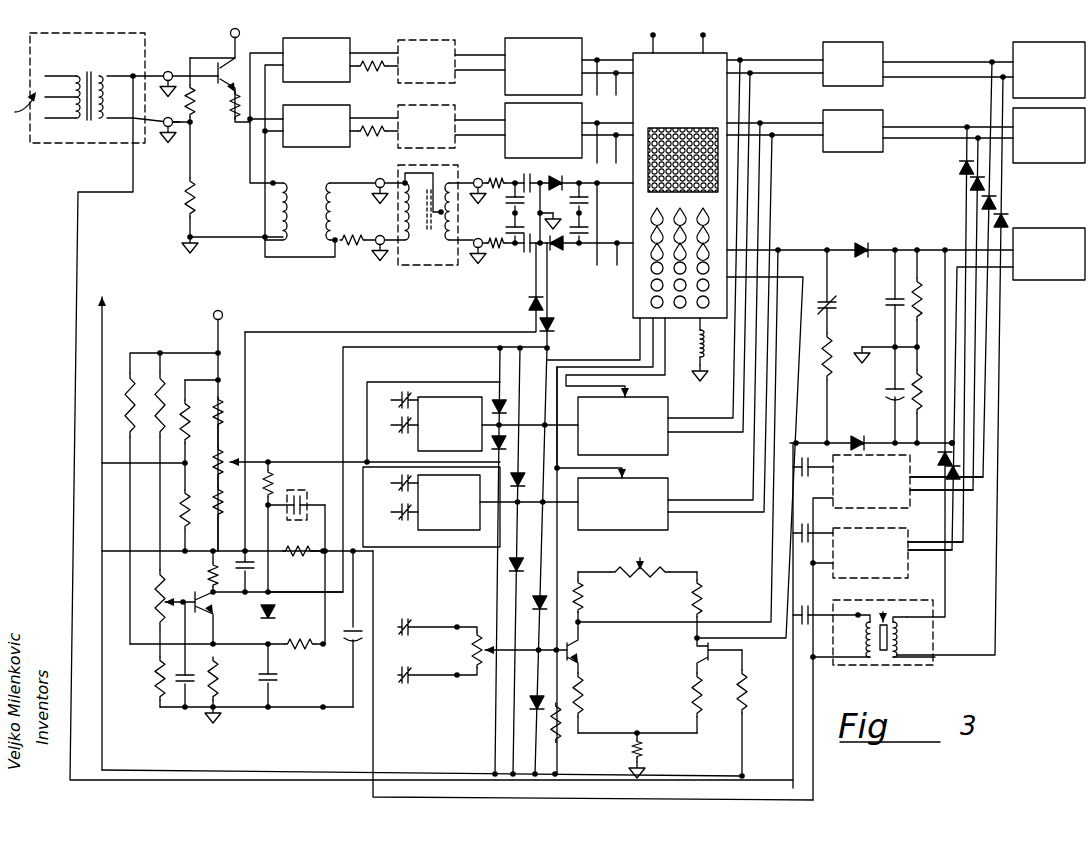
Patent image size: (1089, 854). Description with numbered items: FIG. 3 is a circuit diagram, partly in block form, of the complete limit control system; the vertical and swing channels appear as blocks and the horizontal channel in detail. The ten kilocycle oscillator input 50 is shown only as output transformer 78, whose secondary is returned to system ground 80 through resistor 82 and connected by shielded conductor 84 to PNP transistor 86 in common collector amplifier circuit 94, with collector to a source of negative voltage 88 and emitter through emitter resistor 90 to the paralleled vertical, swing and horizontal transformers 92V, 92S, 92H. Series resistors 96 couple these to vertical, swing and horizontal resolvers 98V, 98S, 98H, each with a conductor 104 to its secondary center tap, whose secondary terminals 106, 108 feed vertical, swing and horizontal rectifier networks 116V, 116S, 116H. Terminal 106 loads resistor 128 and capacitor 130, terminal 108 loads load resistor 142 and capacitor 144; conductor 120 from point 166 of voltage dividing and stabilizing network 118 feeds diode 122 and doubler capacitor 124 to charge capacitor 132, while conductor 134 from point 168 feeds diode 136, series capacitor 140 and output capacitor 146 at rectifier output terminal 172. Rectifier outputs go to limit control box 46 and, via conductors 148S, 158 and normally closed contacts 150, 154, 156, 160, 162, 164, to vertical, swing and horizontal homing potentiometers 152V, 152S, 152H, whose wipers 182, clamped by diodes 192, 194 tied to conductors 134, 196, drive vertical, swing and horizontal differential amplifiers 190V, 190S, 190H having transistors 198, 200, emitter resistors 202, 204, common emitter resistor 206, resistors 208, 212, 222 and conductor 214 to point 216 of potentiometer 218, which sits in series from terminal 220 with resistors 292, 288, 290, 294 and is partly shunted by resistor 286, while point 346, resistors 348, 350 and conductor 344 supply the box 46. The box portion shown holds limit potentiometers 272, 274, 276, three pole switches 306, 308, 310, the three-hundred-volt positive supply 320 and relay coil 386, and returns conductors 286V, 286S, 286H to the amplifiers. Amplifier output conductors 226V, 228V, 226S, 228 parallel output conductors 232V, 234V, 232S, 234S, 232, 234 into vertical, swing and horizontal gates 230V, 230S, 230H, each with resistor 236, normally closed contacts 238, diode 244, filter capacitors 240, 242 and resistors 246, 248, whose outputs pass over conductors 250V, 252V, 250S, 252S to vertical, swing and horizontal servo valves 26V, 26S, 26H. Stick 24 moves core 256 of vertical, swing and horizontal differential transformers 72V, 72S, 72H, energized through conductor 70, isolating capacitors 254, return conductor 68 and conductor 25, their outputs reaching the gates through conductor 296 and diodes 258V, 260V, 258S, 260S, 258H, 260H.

The oscillator input 50 is at (19, 106).
The output transformer 78 is at (89, 138).
The shielded conductor 84 is at (152, 74).
The PNP transistor 86 is at (197, 95).
The source of negative voltage 88 is at (231, 34).
The emitter resistor 90 is at (228, 123).
The common collector amplifier circuit 94 is at (214, 117).
The resistor 82 is at (200, 200).
The system ground 80 is at (195, 254).
The conductor 70 is at (78, 262).
The vertical transformer 92V is at (290, 40).
The swing transformer 92S is at (290, 106).
The horizontal transformer 92H is at (305, 190).
The series resistor 96 is at (360, 80).
The vertical resolver 98V is at (418, 42).
The swing resolver 98S is at (418, 106).
The horizontal resolver 98H is at (412, 169).
The conductor 104 is at (442, 212).
The secondary terminal 108 is at (454, 245).
The secondary terminal 106 is at (470, 178).
The load resistor 142 is at (478, 262).
The resistor 128 is at (493, 175).
The series capacitor 140 is at (498, 250).
The doubler capacitor 124 is at (520, 176).
The capacitor 130 is at (510, 202).
The capacitor 144 is at (509, 230).
The vertical rectifier network 116V is at (515, 40).
The swing rectifier network 116S is at (505, 105).
The horizontal rectifier network 116H is at (558, 209).
The conductor 148S is at (564, 252).
The capacitor 132 is at (590, 200).
The output capacitor 146 is at (590, 228).
The conductor 120 is at (597, 185).
The rectifier output terminal 172 is at (617, 248).
The conductor 158 is at (600, 270).
The diode 122 is at (528, 303).
The diode 136 is at (560, 324).
The limit control box 46 is at (660, 58).
The conductor 344 is at (652, 34).
The 300 volt positive supply 320 is at (706, 33).
The three pole switch 306 is at (674, 218).
The three pole switch 308 is at (670, 236).
The three pole switch 310 is at (670, 253).
The limit potentiometer 272 is at (670, 270).
The limit potentiometer 274 is at (670, 287).
The limit potentiometer 276 is at (670, 304).
The relay coil 386 is at (696, 341).
The conductor 286V is at (560, 352).
The conductor 286S is at (560, 366).
The conductor 286H is at (640, 386).
The output conductor 232V is at (752, 58).
The output conductor 234V is at (760, 78).
The amplifier output conductor 226V is at (752, 90).
The amplifier output conductor 228V is at (760, 118).
The output conductor 232S is at (780, 130).
The output conductor 234S is at (780, 138).
The output conductor 232 is at (798, 248).
The output conductor 234 is at (790, 275).
The vertical gate 230V is at (840, 42).
The swing gate 230S is at (840, 110).
The conductor 250V is at (900, 62).
The conductor 252V is at (900, 78).
The conductor 250S is at (898, 127).
The conductor 252S is at (908, 138).
The vertical servo valve 26V is at (1073, 42).
The swing servo valve 26S is at (1075, 165).
The horizontal servo valve 26H is at (1068, 282).
The diode 258S is at (963, 167).
The diode 260S is at (973, 184).
The diode 258V is at (981, 200).
The diode 260V is at (992, 218).
The diode 258H is at (950, 455).
The diode 260H is at (958, 468).
The diode 244 is at (862, 243).
The horizontal gate 230H is at (857, 271).
The normally closed contacts 238 is at (838, 300).
The resistor 236 is at (835, 340).
The filter capacitor 240 is at (886, 310).
The filter capacitor 242 is at (882, 396).
The resistor 246 is at (920, 252).
The resistor 248 is at (918, 372).
The amplifier output conductor 228 is at (790, 462).
The isolating capacitor 254 is at (800, 480).
The vertical differential transformer 72V is at (895, 510).
The swing differential transformer 72S is at (890, 580).
The horizontal differential transformer 72H is at (915, 667).
The conductor 296 is at (874, 600).
The core 256 is at (884, 650).
The vertical differential amplifier 190V is at (670, 445).
The swing differential amplifier 190S is at (648, 480).
The horizontal differential amplifier 190H is at (637, 582).
The amplifier output conductor 226S is at (771, 522).
The vertical homing potentiometer 152V is at (445, 397).
The swing homing potentiometer 152S is at (422, 540).
The horizontal homing potentiometer 152H is at (470, 648).
The normally closed contact 154 is at (405, 393).
The normally closed contact 162 is at (402, 440).
The normally closed contact 156 is at (398, 476).
The normally closed contact 164 is at (402, 524).
The point 216 is at (367, 462).
The conductor 134 is at (355, 352).
The diode 192 is at (498, 392).
The diode 194 is at (492, 450).
The normally closed contact 150 is at (414, 612).
The normally closed contact 160 is at (420, 690).
The wiper 182 is at (492, 655).
The conductor 214 is at (642, 560).
The resistor 208 is at (566, 585).
The resistor 212 is at (705, 585).
The transistor 198 is at (585, 640).
The transistor 200 is at (694, 650).
The emitter resistor 202 is at (588, 690).
The emitter resistor 204 is at (690, 703).
The common emitter resistor 206 is at (642, 746).
The resistor 222 is at (748, 704).
The conductor 196 is at (237, 770).
The return conductor 68 is at (370, 725).
The conductor 25 is at (355, 553).
The terminal 220 is at (222, 312).
The resistor 348 is at (187, 398).
The resistor 292 is at (222, 392).
The potentiometer 218 is at (224, 460).
The resistor 288 is at (222, 506).
The point 346 is at (187, 470).
The resistor 350 is at (175, 528).
The point 166 is at (236, 548).
The voltage dividing and stabilizing network 118 is at (228, 523).
The resistor 286 is at (275, 462).
The resistor 290 is at (286, 548).
The point 168 is at (248, 590).
The stick 24 is at (352, 616).
The resistor 294 is at (293, 658).